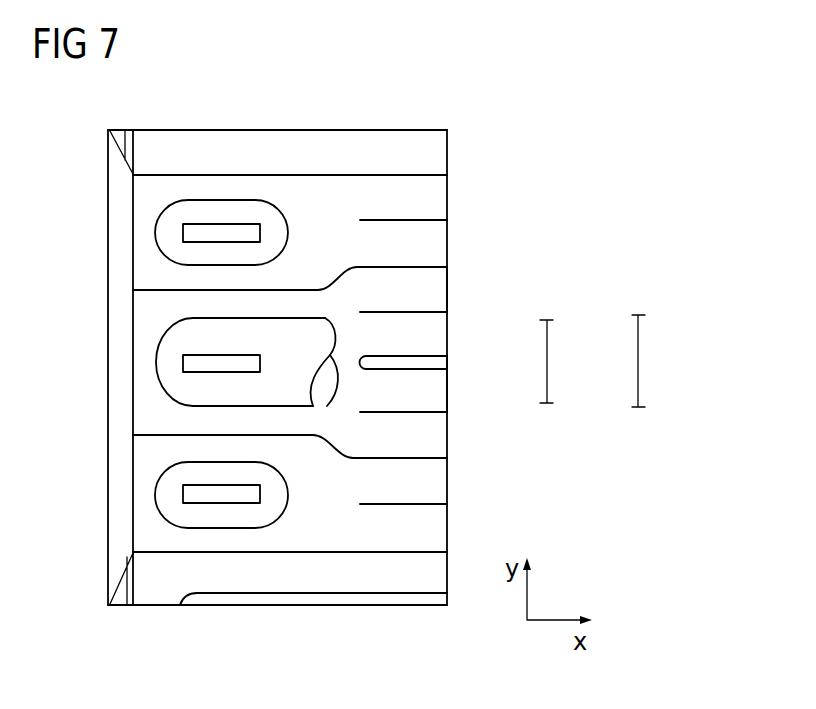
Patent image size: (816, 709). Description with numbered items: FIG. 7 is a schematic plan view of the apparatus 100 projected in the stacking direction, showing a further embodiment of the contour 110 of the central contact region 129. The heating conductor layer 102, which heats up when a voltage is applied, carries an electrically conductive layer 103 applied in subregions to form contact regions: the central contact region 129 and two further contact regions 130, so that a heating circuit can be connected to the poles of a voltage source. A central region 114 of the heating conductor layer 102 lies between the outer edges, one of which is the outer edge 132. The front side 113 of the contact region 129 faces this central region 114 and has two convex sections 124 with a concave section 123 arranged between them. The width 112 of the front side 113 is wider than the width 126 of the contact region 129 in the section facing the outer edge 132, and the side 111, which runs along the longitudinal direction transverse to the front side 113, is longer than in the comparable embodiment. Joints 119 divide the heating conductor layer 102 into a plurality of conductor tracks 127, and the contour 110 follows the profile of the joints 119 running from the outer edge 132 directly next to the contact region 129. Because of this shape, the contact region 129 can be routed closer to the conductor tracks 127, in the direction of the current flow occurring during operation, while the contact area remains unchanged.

The apparatus 100 is at (384, 106).
The heating conductor layer 102 is at (168, 580).
The electrically conductive layer 103 is at (167, 370).
The contour 110 is at (189, 386).
The side 111 is at (193, 320).
The width 112 is at (642, 358).
The front side 113 is at (342, 342).
The central region 114 is at (467, 609).
The joint 119 is at (452, 262).
The concave section 123 is at (320, 362).
The convex section 124 is at (320, 288).
The width 126 is at (550, 360).
The conductor track 127 is at (447, 280).
The central contact region 129 is at (173, 353).
The further contact region 130 is at (197, 200).
The outer edge 132 is at (107, 500).